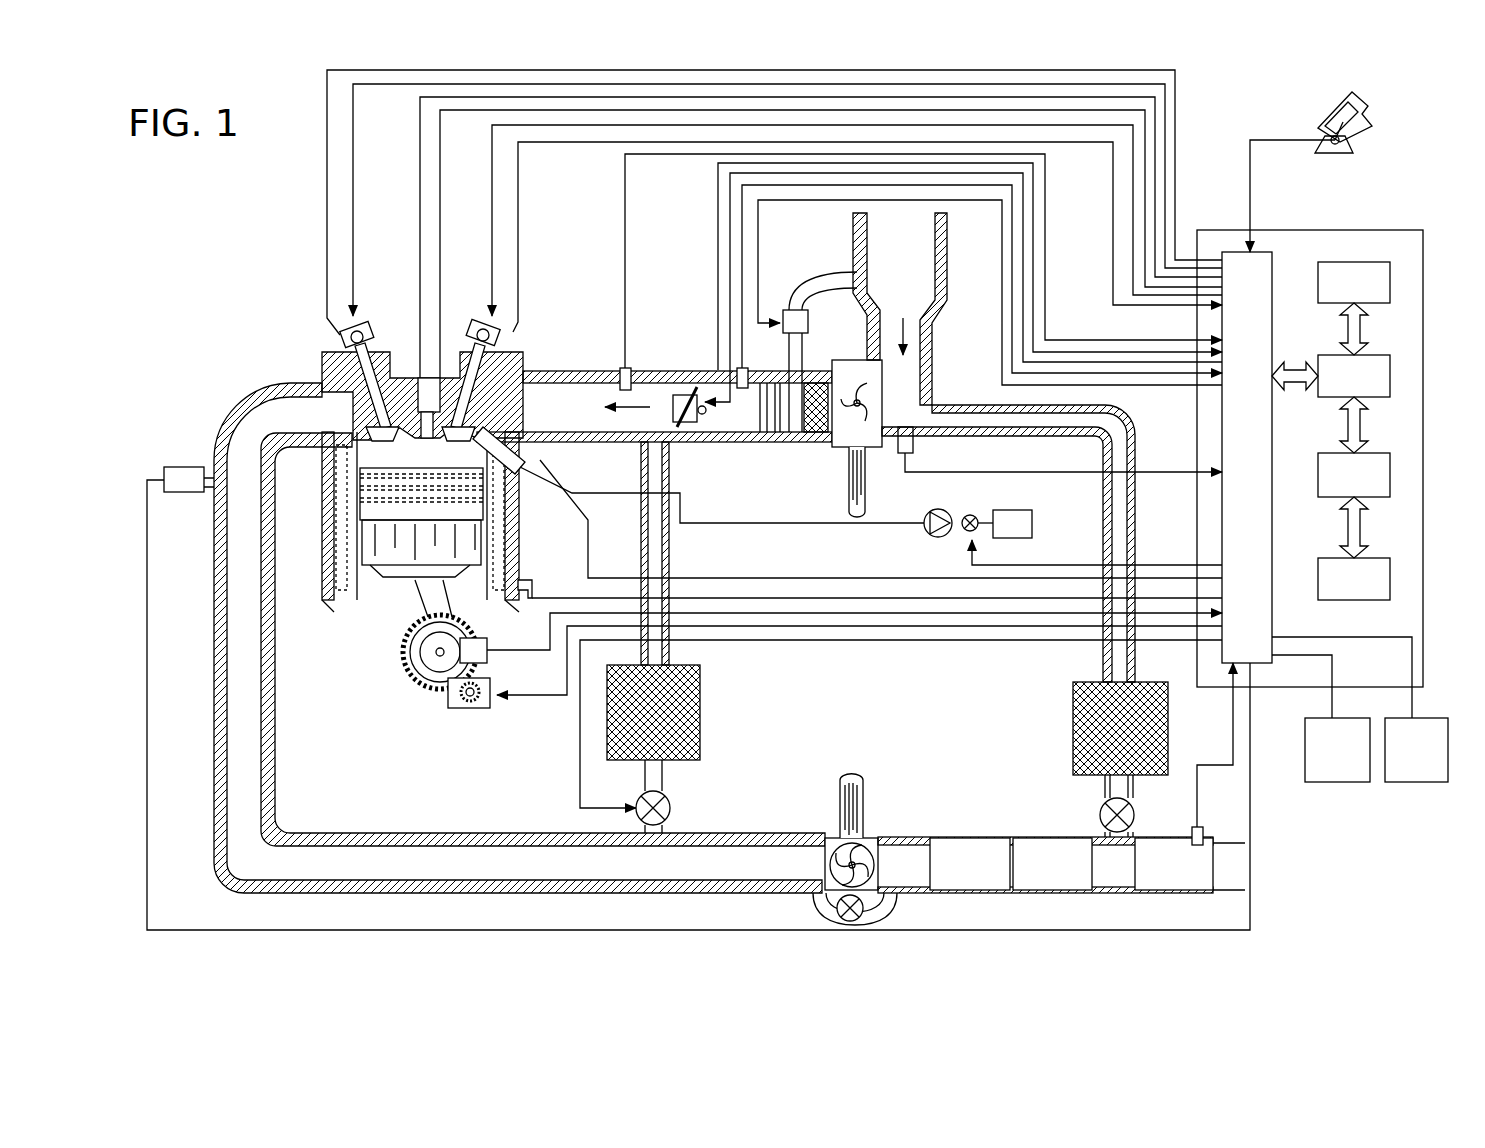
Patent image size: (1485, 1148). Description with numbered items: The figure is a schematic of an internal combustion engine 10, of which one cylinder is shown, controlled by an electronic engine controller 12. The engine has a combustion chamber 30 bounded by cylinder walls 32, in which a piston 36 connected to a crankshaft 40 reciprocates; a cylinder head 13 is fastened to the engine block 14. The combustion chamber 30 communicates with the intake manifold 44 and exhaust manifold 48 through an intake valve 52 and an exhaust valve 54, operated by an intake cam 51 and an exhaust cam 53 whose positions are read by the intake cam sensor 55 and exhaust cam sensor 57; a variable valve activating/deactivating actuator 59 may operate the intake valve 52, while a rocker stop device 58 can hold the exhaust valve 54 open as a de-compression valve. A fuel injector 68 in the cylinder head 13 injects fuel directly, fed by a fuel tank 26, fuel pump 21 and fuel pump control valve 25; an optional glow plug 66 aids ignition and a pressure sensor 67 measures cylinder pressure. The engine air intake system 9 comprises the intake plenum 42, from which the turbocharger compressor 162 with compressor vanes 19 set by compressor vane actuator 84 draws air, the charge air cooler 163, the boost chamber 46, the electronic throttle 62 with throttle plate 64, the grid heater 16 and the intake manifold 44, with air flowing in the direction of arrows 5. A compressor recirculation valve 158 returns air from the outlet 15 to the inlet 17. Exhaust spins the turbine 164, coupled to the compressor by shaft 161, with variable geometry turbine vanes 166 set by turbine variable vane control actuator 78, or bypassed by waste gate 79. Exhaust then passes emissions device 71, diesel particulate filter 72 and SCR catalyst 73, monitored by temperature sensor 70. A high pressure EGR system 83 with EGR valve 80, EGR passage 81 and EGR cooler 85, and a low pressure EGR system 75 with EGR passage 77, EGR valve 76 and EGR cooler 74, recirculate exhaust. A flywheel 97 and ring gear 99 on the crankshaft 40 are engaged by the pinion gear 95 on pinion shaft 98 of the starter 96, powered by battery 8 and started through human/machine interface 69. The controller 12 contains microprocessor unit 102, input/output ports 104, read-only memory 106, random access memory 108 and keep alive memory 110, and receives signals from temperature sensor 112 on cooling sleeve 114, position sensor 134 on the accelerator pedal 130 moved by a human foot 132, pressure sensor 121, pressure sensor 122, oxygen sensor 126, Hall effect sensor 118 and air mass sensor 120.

The arrows 5 is at (641, 408).
The battery 8 is at (1360, 709).
The engine air intake system 9 is at (700, 296).
The internal combustion engine 10 is at (262, 305).
The electronic engine controller 12 is at (1405, 232).
The cylinder head 13 is at (546, 347).
The engine block 14 is at (330, 466).
The outlet 15 is at (818, 372).
The grid heater 16 is at (770, 430).
The inlet 17 is at (882, 393).
The compressor vanes 19 is at (862, 412).
The fuel pump 21 is at (955, 509).
The fuel pump control valve 25 is at (966, 530).
The fuel tank 26 is at (1005, 524).
The combustion chamber 30 is at (402, 505).
The cylinder walls 32 is at (372, 614).
The piston 36 is at (402, 613).
The crankshaft 40 is at (424, 677).
The intake plenum 42 is at (900, 309).
The intake manifold 44 is at (654, 406).
The intake boost chamber 46 is at (744, 412).
The exhaust manifold 48 is at (518, 638).
The intake cam 51 is at (485, 322).
The intake valve 52 is at (462, 422).
The exhaust cam 53 is at (363, 325).
The exhaust valve 54 is at (328, 388).
The intake cam sensor 55 is at (500, 338).
The exhaust cam sensor 57 is at (342, 332).
The rocker stop device 58 is at (372, 336).
The variable valve activating/deactivating actuator 59 is at (477, 332).
The electronic throttle 62 is at (683, 398).
The throttle plate 64 is at (698, 387).
The glow plug 66 is at (424, 376).
The pressure sensor 67 is at (440, 400).
The fuel injector 68 is at (515, 470).
The human/machine interface 69 is at (1321, 718).
The temperature sensor 70 is at (1200, 826).
The emissions device 71 is at (1061, 865).
The diesel particulate filter 72 is at (1052, 864).
The selective catalytic reduction catalyst 73 is at (1174, 864).
The EGR cooler 74 is at (1168, 730).
The low pressure EGR system 75 is at (1040, 755).
The EGR valve 76 is at (1134, 813).
The EGR passage 77 is at (1110, 508).
The turbine variable vane control actuator 78 is at (878, 842).
The waste gate 79 is at (865, 915).
The EGR valve 80 is at (634, 795).
The EGR passage 81 is at (643, 470).
The high pressure EGR system 83 is at (568, 782).
The compressor vane actuator 84 is at (833, 372).
The EGR cooler 85 is at (700, 708).
The pinion gear 95 is at (472, 705).
The starter 96 is at (487, 705).
The flywheel 97 is at (418, 662).
The pinion shaft 98 is at (460, 712).
The ring gear 99 is at (432, 690).
The microprocessor unit 102 is at (1390, 374).
The input/output ports 104 is at (1272, 262).
The read-only memory 106 is at (1390, 280).
The random access memory 108 is at (1390, 472).
The keep alive memory 110 is at (1390, 574).
The temperature sensor 112 is at (534, 584).
The cooling sleeve 114 is at (338, 506).
The Hall effect sensor 118 is at (487, 645).
The sensor 120 is at (913, 447).
The pressure sensor 121 is at (625, 367).
The pressure sensor 122 is at (745, 367).
The universal exhaust gas oxygen sensor 126 is at (164, 475).
The accelerator pedal 130 is at (1330, 132).
The human foot 132 is at (1372, 108).
The position sensor 134 is at (1353, 150).
The compressor recirculation valve 158 is at (788, 310).
The shaft 161 is at (862, 780).
The turbocharger compressor 162 is at (846, 480).
The charge air cooler 163 is at (818, 436).
The turbine 164 is at (835, 838).
The variable geometry turbine vanes 166 is at (875, 868).